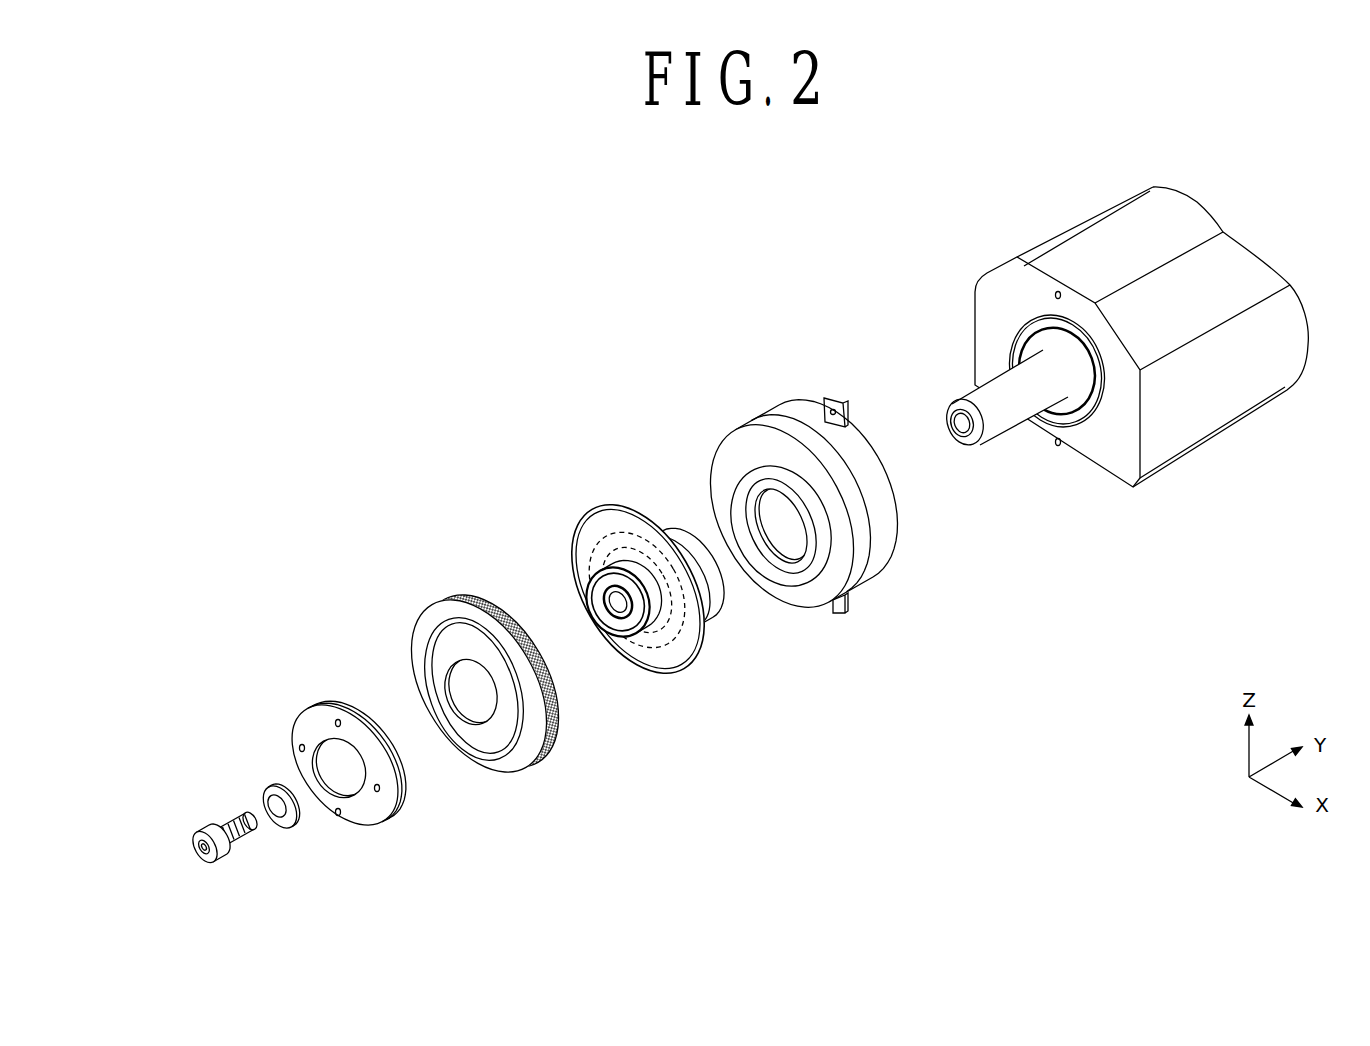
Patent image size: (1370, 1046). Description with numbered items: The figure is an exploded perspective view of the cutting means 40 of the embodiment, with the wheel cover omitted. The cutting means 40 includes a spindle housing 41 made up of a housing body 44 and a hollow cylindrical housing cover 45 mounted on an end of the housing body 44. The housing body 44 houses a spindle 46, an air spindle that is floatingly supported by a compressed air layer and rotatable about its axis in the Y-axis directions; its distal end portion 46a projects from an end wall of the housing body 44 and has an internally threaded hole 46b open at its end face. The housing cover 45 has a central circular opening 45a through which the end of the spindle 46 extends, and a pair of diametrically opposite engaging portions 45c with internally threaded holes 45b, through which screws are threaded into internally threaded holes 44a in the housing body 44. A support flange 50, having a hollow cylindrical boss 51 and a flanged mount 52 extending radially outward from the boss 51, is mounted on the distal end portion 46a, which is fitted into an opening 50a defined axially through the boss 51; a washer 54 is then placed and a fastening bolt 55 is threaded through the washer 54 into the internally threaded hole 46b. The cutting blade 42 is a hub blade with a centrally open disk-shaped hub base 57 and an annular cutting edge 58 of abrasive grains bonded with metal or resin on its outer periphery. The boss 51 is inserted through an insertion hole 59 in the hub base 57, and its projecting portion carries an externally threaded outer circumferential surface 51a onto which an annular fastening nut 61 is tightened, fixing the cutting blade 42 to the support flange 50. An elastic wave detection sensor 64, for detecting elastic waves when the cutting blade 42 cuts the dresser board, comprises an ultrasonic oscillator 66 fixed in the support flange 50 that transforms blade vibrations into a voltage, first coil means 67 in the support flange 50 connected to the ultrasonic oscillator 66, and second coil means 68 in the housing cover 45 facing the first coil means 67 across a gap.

The cutting means 40 is at (315, 535).
The spindle housing 41 is at (1053, 200).
The cutting blade 42 is at (420, 580).
The housing body 44 is at (1225, 398).
The internally threaded holes 44a is at (1060, 292).
The housing cover 45 is at (778, 405).
The circular opening 45a is at (772, 540).
The holes 45b is at (833, 407).
The engaging portions 45c is at (847, 400).
The spindle 46 is at (940, 410).
The distal end portion 46a is at (997, 425).
The internally threaded hole 46b is at (962, 428).
The support flange 50 is at (590, 492).
The opening 50a is at (620, 602).
The boss 51 is at (652, 622).
The externally threaded outer circumferential surface 51a is at (607, 578).
The flanged mount 52 is at (705, 643).
The washer 54 is at (268, 783).
The fastening bolt 55 is at (225, 807).
The hub base 57 is at (493, 757).
The cutting edge 58 is at (530, 775).
The insertion hole 59 is at (460, 710).
The fastening nut 61 is at (302, 712).
The elastic wave detection sensor 64 is at (724, 412).
The ultrasonic oscillator 66 is at (617, 532).
The first coil means 67 is at (637, 525).
The second coil means 68 is at (744, 465).